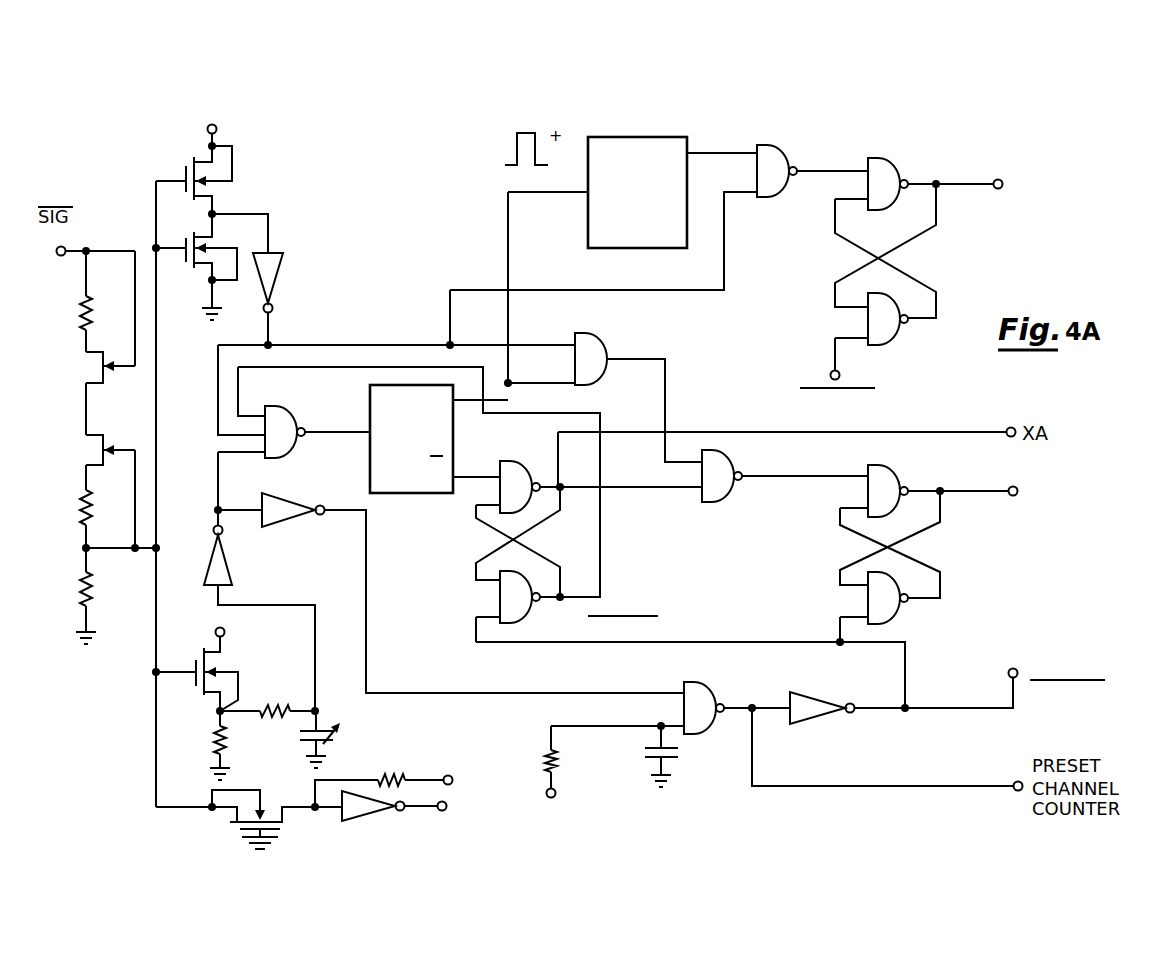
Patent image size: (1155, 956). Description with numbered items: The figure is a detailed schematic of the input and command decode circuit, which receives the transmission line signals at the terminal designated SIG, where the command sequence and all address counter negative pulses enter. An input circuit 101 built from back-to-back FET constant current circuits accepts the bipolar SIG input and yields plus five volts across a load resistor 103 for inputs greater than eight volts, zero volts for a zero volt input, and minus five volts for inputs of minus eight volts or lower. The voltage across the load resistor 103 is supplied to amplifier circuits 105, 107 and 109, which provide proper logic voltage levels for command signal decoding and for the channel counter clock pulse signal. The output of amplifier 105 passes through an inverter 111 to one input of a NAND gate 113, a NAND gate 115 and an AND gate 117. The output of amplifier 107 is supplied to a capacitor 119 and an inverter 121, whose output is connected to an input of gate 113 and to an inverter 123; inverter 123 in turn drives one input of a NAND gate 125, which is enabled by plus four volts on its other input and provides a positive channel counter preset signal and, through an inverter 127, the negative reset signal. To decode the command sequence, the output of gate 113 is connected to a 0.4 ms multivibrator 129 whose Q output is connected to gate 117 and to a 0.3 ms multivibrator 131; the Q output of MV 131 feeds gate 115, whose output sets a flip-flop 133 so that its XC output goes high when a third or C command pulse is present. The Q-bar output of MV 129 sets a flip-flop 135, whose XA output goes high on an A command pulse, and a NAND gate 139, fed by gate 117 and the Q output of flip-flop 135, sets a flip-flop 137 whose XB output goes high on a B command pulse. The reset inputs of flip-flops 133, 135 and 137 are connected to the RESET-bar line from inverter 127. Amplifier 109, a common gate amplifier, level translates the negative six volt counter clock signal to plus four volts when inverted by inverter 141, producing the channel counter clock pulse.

The input circuit 101 is at (141, 411).
The load resistor 103 is at (92, 578).
The amplifier circuit 105 is at (196, 227).
The amplifier circuit 107 is at (200, 737).
The amplifier circuit 109 is at (220, 847).
The inverter 111 is at (284, 258).
The NAND gate 113 is at (294, 448).
The NAND gate 115 is at (774, 147).
The AND gate 117 is at (600, 345).
The capacitor 119 is at (336, 733).
The inverter 121 is at (231, 561).
The inverter 123 is at (288, 498).
The NAND gate 125 is at (708, 692).
The inverter 127 is at (818, 694).
The 0.4 ms multivibrator 129 is at (369, 396).
The 0.3 ms multivibrator 131 is at (668, 137).
The flip-flop 133 is at (952, 270).
The flip-flop 135 is at (580, 557).
The flip-flop 137 is at (968, 565).
The NAND gate 139 is at (729, 466).
The inverter 141 is at (372, 813).